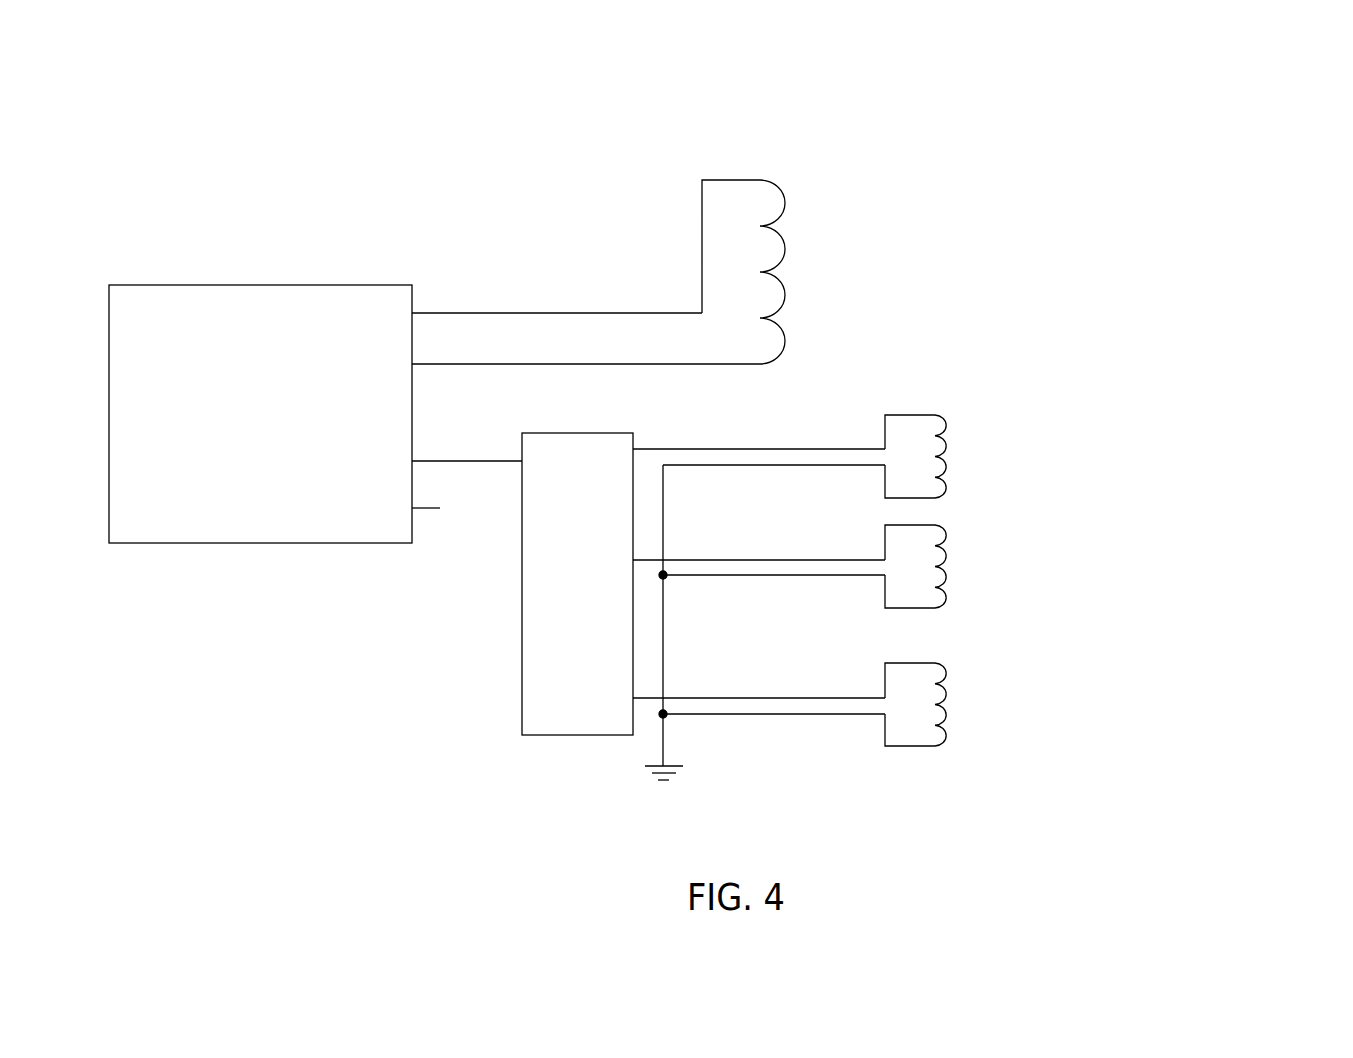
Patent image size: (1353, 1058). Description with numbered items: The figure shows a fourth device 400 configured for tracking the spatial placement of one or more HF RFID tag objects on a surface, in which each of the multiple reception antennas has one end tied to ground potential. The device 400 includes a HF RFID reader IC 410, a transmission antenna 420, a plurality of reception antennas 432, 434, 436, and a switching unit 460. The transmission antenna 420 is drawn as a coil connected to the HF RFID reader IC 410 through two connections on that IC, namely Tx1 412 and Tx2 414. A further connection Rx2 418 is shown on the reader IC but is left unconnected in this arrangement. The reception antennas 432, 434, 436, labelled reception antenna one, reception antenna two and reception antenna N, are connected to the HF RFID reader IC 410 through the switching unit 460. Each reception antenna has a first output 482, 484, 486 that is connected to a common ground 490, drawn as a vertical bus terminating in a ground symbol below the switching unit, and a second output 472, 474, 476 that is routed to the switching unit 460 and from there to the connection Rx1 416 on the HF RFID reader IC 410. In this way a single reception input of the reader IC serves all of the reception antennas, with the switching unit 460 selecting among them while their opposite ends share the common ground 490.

The fourth device 400 is at (145, 58).
The HF RFID reader IC 410 is at (260, 414).
The Tx1 connection 412 is at (506, 310).
The Tx2 connection 414 is at (535, 361).
The Rx1 connection 416 is at (416, 455).
The reception port Rx2 418 is at (375, 507).
The transmission antenna 420 is at (787, 242).
The reception antenna 432 is at (947, 449).
The reception antenna 434 is at (947, 560).
The reception antenna 436 is at (947, 698).
The switching unit 460 is at (577, 584).
The second output 472 is at (733, 447).
The second output 474 is at (685, 558).
The second output 476 is at (733, 696).
The first output 482 is at (737, 468).
The first output 484 is at (690, 578).
The first output 486 is at (737, 717).
The common ground 490 is at (682, 775).